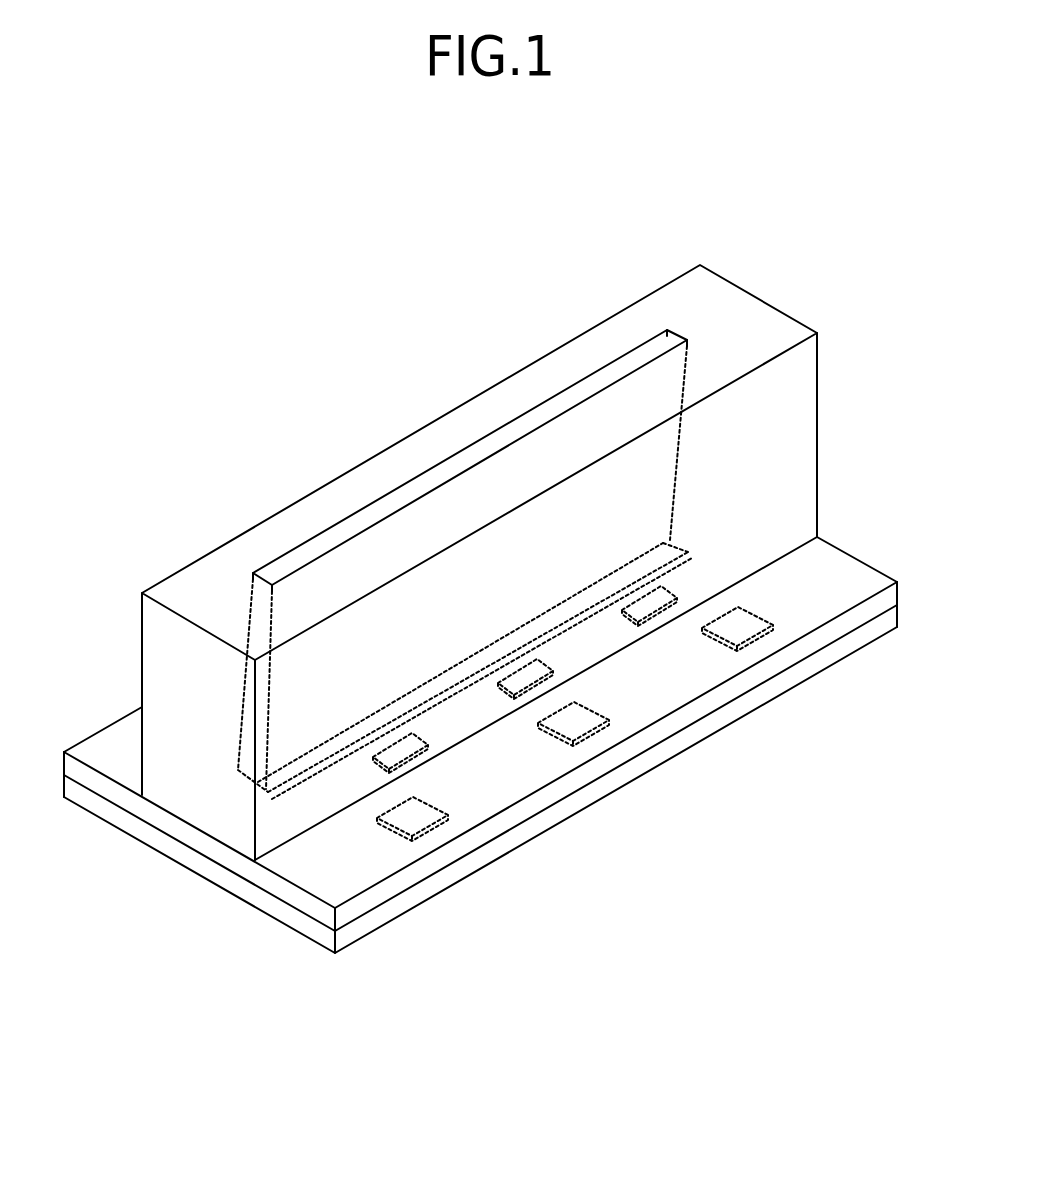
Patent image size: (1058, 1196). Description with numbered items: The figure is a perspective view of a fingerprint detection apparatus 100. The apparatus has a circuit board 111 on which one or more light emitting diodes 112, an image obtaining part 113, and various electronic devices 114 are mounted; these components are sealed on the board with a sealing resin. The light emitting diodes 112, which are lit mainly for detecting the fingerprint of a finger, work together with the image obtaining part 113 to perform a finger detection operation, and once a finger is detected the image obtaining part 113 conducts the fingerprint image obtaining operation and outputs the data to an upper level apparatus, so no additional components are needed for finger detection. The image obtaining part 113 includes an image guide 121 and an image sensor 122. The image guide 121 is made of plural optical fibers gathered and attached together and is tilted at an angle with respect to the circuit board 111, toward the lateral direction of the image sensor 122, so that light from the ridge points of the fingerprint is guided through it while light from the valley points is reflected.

The fingerprint detection apparatus 100 is at (262, 209).
The circuit board 111 is at (372, 920).
The light emitting diodes 112 is at (675, 592).
The image obtaining part 113 is at (258, 402).
The electronic devices 114 is at (725, 305).
The image guide 121 is at (307, 553).
The image sensor 122 is at (222, 765).